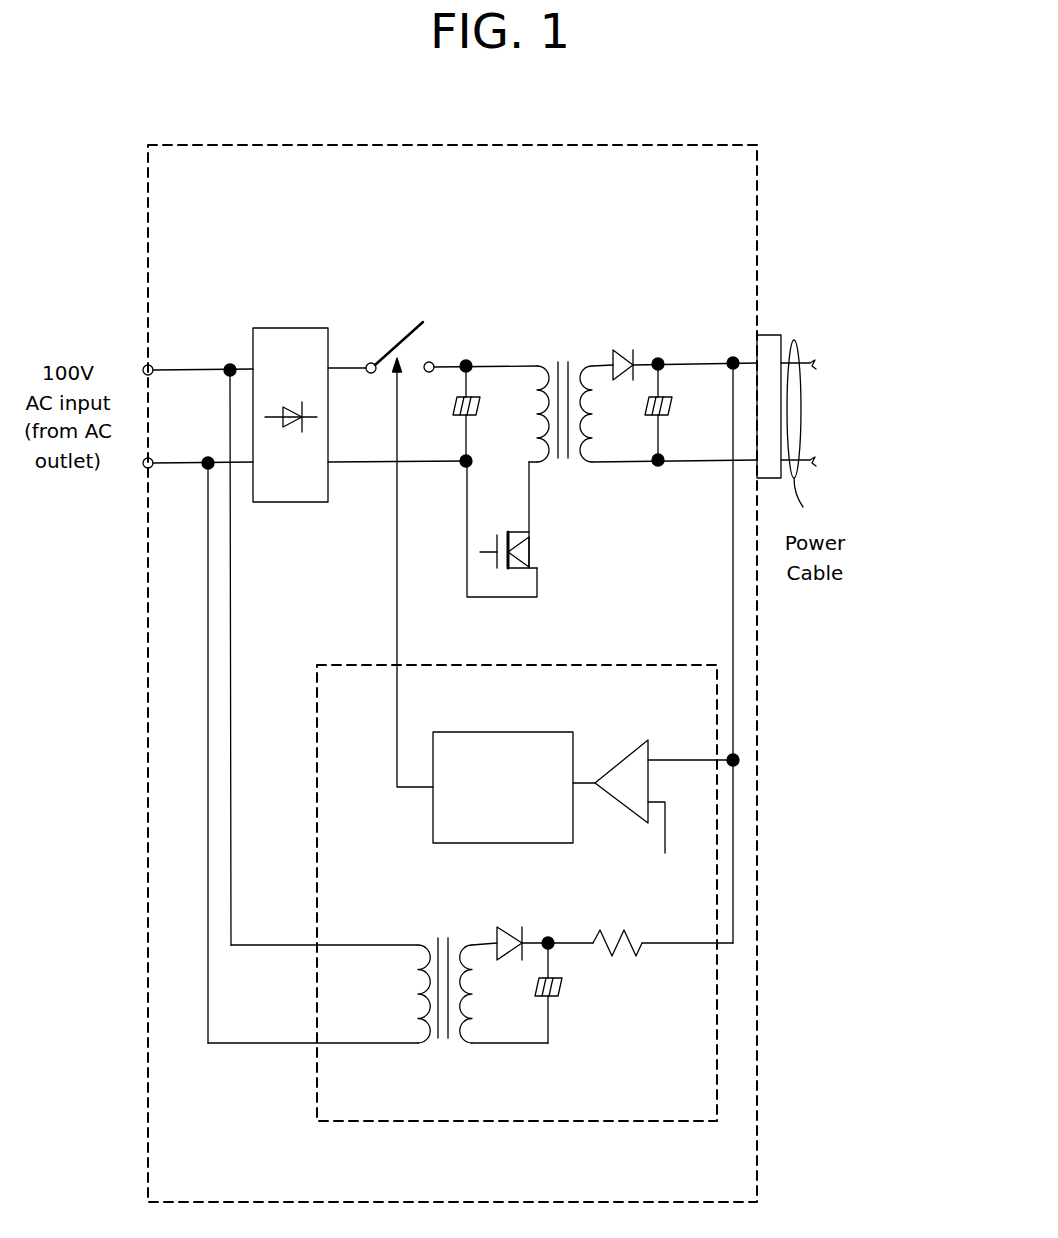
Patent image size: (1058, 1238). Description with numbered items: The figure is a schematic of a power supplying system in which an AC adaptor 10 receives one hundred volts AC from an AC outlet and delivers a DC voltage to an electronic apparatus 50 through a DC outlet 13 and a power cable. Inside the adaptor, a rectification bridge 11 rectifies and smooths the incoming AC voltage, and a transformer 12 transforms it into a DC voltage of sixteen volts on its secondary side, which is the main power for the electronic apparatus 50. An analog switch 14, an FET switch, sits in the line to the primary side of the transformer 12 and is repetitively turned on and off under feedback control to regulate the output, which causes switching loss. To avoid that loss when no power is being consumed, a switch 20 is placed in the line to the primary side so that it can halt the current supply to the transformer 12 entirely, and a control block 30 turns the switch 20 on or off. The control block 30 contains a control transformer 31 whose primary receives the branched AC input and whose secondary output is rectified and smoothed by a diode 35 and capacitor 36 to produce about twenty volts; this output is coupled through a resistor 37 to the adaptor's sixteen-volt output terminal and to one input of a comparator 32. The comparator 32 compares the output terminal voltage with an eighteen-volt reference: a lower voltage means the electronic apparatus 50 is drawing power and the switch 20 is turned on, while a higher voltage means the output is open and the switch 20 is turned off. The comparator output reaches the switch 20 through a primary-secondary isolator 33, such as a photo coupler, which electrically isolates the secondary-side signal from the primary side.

The AC adaptor 10 is at (613, 143).
The rectification bridge 11 is at (275, 328).
The transformer 12 is at (568, 333).
The DC outlet 13 is at (775, 335).
The analog switch 14 is at (556, 553).
The switch 20 is at (405, 312).
The control block 30 is at (365, 667).
The control transformer 31 is at (427, 919).
The comparator 32 is at (630, 753).
The primary-secondary isolator 33 is at (492, 730).
The diode 35 is at (498, 927).
The capacitor 36 is at (563, 990).
The resistor 37 is at (627, 950).
The electronic apparatus 50 is at (852, 401).